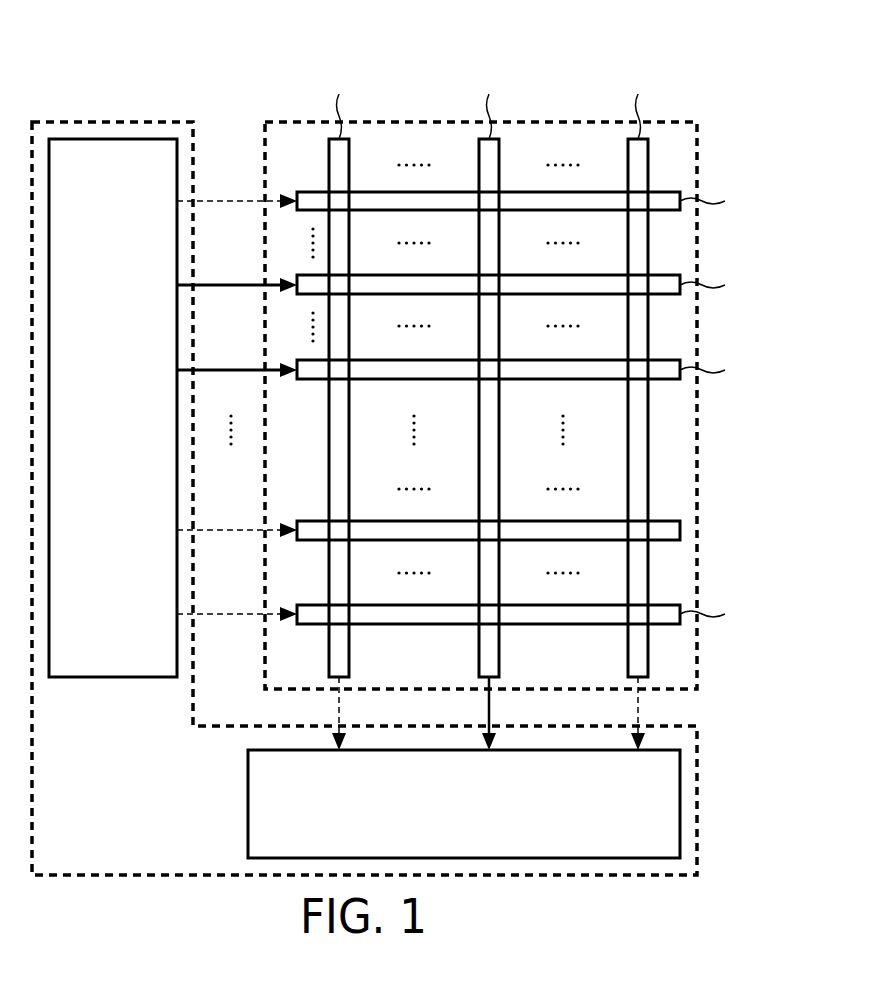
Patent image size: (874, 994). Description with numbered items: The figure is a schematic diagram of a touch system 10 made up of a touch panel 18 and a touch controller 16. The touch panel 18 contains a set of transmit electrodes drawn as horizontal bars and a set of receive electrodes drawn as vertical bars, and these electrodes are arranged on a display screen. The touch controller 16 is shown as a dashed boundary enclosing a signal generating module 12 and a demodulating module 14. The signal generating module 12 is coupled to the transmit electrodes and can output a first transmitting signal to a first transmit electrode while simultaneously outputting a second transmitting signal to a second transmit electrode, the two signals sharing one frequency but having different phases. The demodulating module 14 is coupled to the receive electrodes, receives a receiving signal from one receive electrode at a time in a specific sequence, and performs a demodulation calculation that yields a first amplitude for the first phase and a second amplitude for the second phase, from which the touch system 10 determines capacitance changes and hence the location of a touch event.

The touch system 10 is at (772, 44).
The signal generating module 12 is at (115, 138).
The demodulating module 14 is at (248, 803).
The touch controller 16 is at (700, 803).
The touch panel 18 is at (406, 122).